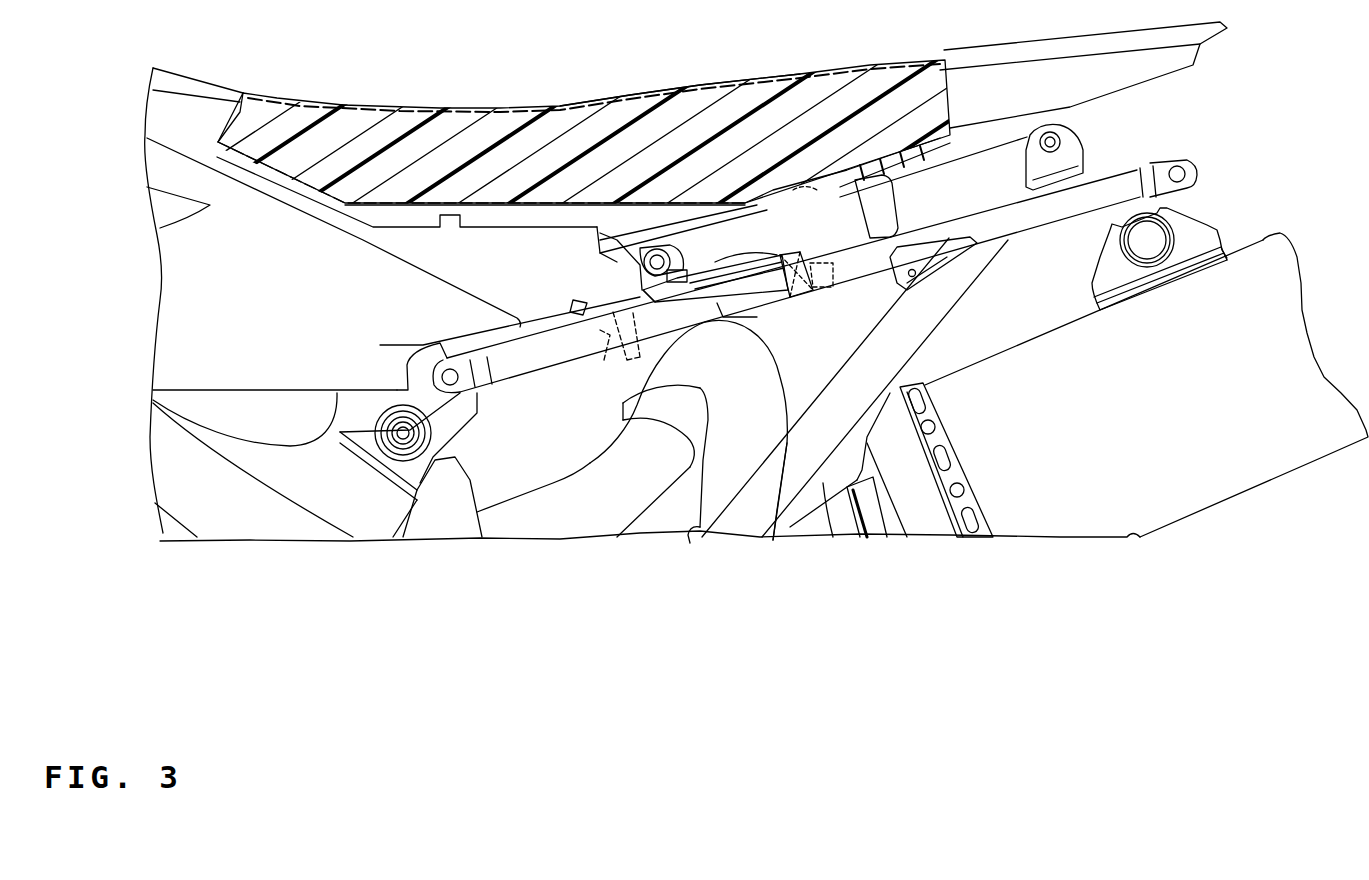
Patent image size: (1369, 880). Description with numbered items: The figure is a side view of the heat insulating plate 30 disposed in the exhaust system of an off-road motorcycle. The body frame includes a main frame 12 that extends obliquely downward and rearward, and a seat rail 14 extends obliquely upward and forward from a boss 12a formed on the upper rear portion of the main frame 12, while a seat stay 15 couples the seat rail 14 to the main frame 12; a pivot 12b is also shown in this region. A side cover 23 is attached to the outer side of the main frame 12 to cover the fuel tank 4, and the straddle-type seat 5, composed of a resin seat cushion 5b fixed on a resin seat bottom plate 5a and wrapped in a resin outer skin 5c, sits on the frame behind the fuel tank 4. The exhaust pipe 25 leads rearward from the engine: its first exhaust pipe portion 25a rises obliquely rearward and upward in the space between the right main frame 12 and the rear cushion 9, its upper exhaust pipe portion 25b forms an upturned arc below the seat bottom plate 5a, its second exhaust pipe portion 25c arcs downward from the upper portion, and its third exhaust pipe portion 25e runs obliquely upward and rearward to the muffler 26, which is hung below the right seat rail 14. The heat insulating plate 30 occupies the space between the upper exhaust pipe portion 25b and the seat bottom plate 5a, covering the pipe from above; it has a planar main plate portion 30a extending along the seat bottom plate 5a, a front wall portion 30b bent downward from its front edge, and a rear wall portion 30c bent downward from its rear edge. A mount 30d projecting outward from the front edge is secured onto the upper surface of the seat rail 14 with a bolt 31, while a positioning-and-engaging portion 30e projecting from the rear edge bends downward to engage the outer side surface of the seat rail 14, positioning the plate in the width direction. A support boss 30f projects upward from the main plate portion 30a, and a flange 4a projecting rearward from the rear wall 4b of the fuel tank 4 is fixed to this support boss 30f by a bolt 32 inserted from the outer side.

The fuel tank 4 is at (515, 225).
The flange 4a is at (596, 253).
The rear wall of fuel tank 4b is at (577, 310).
The seat 5 is at (991, 52).
The seat bottom plate 5a is at (815, 186).
The seat cushion 5b is at (797, 95).
The outer skin 5c is at (740, 84).
The rear cushion 9 is at (472, 478).
The main frame 12 is at (213, 420).
The boss 12a is at (337, 390).
The pivot bolt 12b is at (397, 438).
The seat rail 14 is at (1176, 160).
The seat stay 15 is at (940, 320).
The side cover 23 is at (432, 262).
The exhaust pipe 25 is at (788, 400).
The first exhaust pipe portion 25a is at (547, 487).
The upper exhaust pipe portion 25b is at (788, 386).
The second exhaust pipe portion 25c is at (683, 535).
The third exhaust pipe portion 25e is at (830, 497).
The muffler 26 is at (1262, 238).
The heat insulating plate 30 is at (750, 243).
The main plate portion 30a is at (772, 253).
The front wall portion 30b is at (603, 340).
The rear wall portion 30c is at (815, 263).
The mount 30d is at (740, 318).
The positioning-and-engaging portion 30e is at (820, 297).
The support boss 30f is at (680, 240).
The bolt 31 is at (722, 265).
The bolt 32 is at (655, 250).